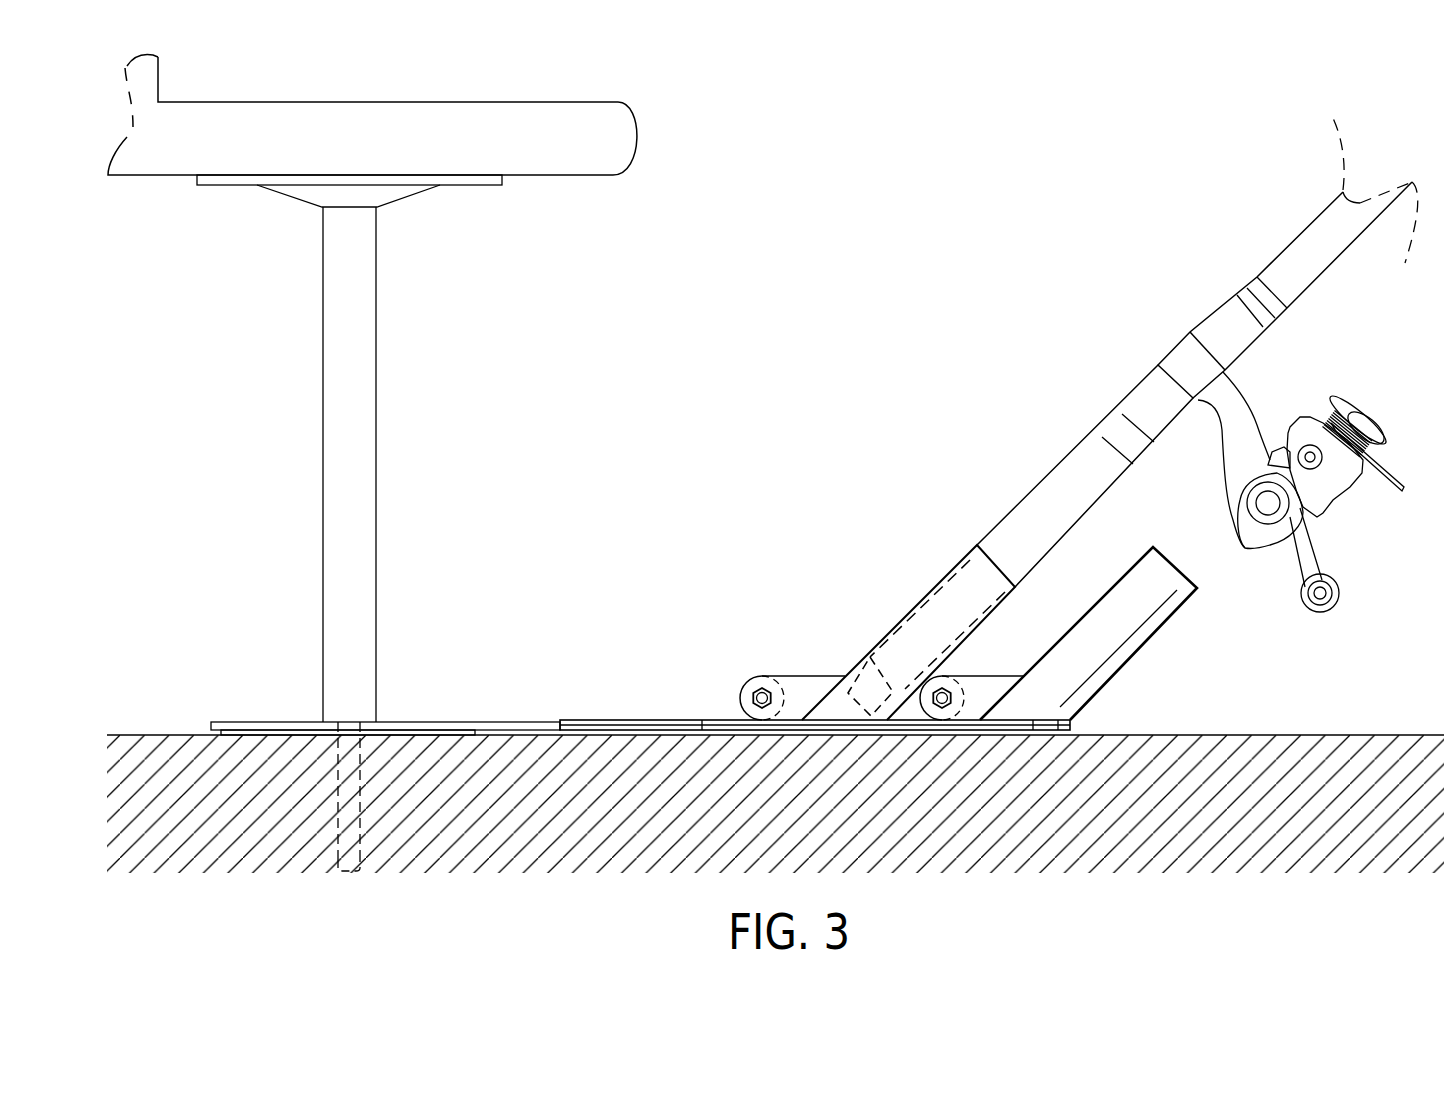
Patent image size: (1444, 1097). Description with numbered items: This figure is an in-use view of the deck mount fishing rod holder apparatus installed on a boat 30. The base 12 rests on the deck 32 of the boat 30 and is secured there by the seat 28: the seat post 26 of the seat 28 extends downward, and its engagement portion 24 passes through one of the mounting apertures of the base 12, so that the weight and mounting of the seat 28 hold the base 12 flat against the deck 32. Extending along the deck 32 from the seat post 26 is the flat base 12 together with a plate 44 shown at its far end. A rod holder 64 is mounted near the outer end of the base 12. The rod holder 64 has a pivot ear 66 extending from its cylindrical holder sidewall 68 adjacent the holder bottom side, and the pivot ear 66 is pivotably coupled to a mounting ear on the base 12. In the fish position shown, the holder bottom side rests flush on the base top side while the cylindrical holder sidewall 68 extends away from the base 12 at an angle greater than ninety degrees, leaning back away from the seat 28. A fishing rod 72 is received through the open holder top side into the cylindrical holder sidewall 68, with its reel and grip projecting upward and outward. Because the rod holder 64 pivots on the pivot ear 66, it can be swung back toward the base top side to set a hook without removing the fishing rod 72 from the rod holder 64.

The base 12 is at (503, 723).
The engagement portion 24 is at (347, 825).
The seat post 26 is at (355, 572).
The seat 28 is at (532, 152).
The boat 30 is at (188, 818).
The deck 32 is at (173, 735).
The base plate 44 is at (1070, 720).
The rod holder 64 is at (912, 612).
The pivot ear 66 is at (988, 693).
The cylindrical holder sidewall 68 is at (1108, 640).
The fishing rod 72 is at (1110, 447).